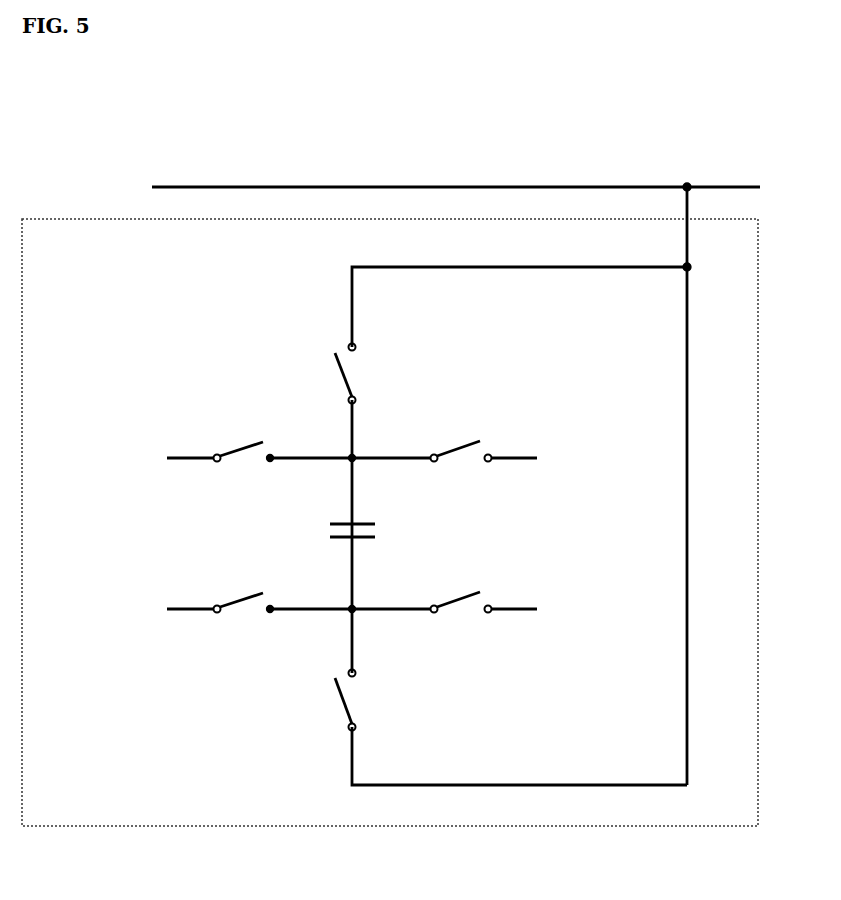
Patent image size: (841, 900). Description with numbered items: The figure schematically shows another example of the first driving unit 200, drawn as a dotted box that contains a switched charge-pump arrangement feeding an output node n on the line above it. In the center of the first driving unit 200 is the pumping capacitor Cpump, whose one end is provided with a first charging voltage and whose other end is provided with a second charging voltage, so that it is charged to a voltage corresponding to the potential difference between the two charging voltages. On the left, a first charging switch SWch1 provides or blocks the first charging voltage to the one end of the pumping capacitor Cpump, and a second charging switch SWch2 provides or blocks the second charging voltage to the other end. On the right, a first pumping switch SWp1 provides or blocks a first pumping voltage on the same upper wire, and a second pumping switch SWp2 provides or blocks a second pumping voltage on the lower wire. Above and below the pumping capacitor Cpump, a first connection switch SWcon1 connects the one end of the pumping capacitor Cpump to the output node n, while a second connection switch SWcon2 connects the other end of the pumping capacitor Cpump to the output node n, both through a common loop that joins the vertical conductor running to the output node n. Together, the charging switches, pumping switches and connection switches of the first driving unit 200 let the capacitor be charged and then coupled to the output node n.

The first driving unit 200 is at (390, 506).
The output node n is at (685, 182).
The first connection switch SWcon1 is at (395, 374).
The second connection switch SWcon2 is at (390, 700).
The first charging switch SWch1 is at (236, 469).
The second charging switch SWch2 is at (236, 620).
The first pumping switch SWp1 is at (461, 468).
The second pumping switch SWp2 is at (461, 619).
The pumping capacitor Cpump is at (398, 536).